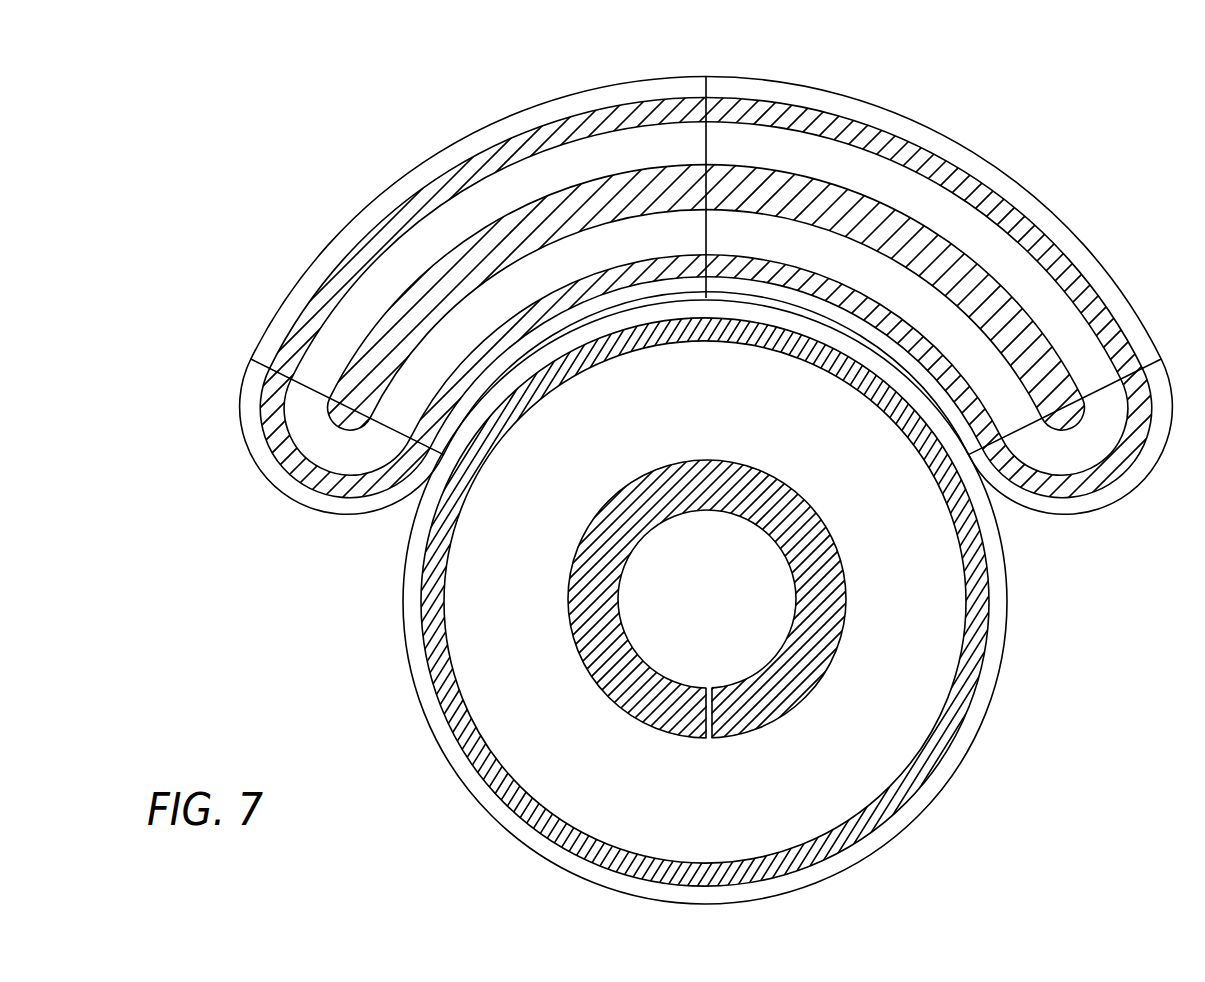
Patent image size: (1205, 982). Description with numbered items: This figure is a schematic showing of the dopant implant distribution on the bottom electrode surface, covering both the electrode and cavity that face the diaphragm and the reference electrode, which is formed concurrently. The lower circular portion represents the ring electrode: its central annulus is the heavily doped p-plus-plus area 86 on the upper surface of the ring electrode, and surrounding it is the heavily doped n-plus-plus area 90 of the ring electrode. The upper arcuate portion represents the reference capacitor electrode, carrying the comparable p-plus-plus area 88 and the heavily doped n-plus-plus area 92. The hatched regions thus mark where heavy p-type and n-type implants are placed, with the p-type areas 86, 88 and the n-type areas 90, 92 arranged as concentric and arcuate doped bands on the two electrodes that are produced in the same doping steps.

The heavily doped n++ area 92 is at (468, 210).
The p++ area 88 is at (933, 257).
The heavily doped n++ area 90 is at (927, 549).
The p++ area 86 is at (755, 717).